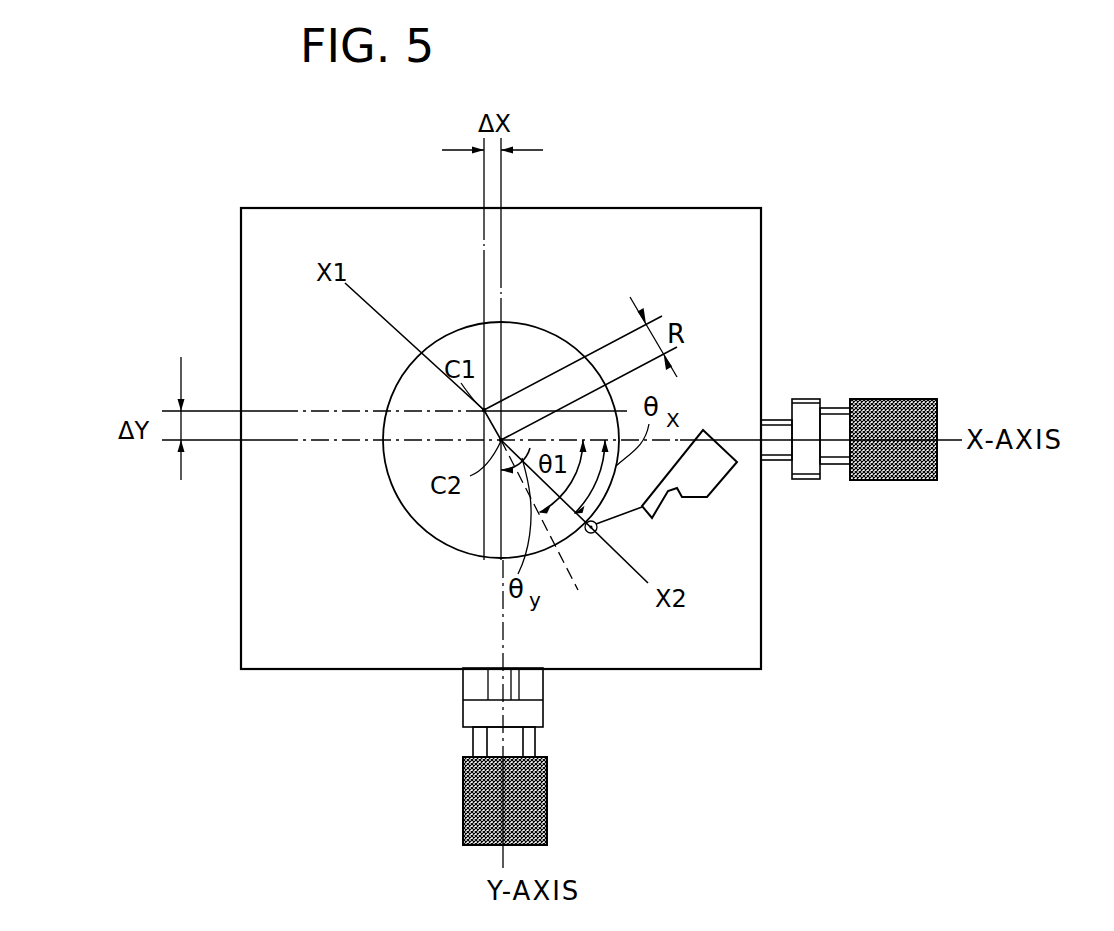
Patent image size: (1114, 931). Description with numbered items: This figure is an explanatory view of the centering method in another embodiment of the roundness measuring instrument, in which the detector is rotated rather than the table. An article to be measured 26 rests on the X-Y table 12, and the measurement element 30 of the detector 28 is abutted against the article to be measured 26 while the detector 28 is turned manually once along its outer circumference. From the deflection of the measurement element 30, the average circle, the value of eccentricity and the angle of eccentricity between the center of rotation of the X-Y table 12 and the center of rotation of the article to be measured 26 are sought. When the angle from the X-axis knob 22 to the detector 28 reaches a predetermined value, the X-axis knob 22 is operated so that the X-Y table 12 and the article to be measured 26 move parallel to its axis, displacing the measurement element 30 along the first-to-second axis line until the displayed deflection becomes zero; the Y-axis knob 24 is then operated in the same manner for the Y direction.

The X-Y table 12 is at (312, 662).
The X-axis knob 22 is at (890, 399).
The Y-axis knob 24 is at (547, 803).
The article to be measured 26 is at (410, 525).
The detector 28 is at (708, 480).
The measurement element 30 is at (592, 534).